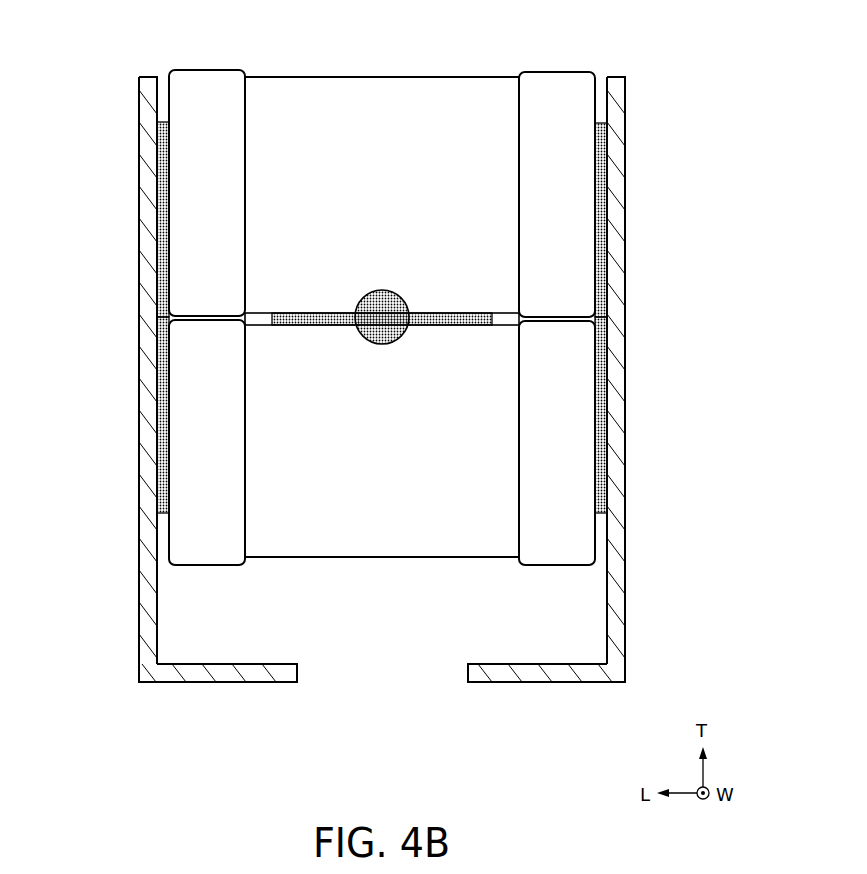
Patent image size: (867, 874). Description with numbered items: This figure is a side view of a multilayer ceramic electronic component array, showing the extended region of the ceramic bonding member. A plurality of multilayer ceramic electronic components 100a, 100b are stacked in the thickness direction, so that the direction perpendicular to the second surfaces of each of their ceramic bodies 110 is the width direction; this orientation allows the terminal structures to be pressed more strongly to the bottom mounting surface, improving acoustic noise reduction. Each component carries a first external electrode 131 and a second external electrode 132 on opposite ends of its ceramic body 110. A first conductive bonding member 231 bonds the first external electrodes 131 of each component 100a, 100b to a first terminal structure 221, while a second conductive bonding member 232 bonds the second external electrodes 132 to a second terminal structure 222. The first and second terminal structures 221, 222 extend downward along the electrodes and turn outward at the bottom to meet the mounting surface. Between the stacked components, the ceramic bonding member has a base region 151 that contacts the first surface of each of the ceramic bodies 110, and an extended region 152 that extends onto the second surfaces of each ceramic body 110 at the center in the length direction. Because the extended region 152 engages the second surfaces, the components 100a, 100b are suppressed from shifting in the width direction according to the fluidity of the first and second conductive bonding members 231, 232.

The ceramic body 110 is at (453, 77).
The first external electrode 131 is at (207, 71).
The second external electrode 132 is at (556, 72).
The base region 151 is at (303, 318).
The extended region 152 is at (390, 338).
The multilayer ceramic electronic component 100a is at (600, 165).
The multilayer ceramic electronic component 100b is at (602, 472).
The first conductive bonding member 231 is at (152, 252).
The second conductive bonding member 232 is at (602, 252).
The first terminal structure 221 is at (215, 679).
The second terminal structure 222 is at (550, 679).